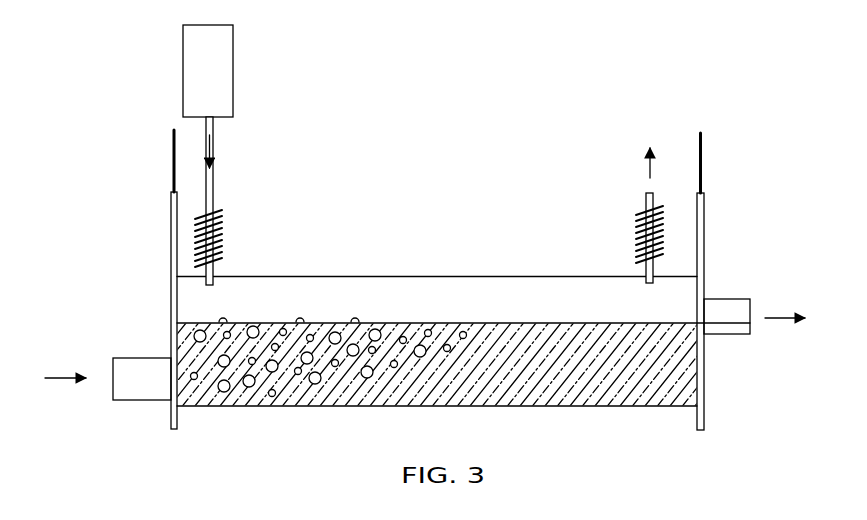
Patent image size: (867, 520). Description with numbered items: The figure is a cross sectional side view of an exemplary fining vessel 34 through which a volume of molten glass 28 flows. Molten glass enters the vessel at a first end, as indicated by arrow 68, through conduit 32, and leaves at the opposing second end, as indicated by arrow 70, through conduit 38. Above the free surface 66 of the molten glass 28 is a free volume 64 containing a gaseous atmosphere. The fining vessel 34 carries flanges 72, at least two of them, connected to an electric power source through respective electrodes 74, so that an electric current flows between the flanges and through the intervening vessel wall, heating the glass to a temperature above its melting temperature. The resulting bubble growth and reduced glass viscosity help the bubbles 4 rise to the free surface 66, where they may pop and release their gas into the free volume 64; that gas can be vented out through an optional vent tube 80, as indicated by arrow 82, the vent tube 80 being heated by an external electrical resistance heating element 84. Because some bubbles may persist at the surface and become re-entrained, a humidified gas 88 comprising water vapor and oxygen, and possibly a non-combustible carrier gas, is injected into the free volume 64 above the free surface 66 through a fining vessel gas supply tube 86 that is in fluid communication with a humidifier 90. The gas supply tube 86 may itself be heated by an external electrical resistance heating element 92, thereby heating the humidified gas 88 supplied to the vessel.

The bubble 4 is at (300, 322).
The molten glass 28 is at (587, 376).
The conduit 32 is at (145, 402).
The fining vessel 34 is at (503, 272).
The conduit 38 is at (728, 337).
The free volume 64 is at (445, 309).
The free surface 66 is at (516, 322).
The arrow 68 is at (68, 377).
The arrow 70 is at (782, 313).
The flange 72 is at (170, 222).
The electrode 74 is at (170, 147).
The vent tube 80 is at (654, 200).
The arrow 82 is at (648, 170).
The external electrical resistance heating element 84 is at (633, 234).
The fining vessel gas supply tube 86 is at (215, 192).
The humidified gas 88 is at (213, 148).
The humidifier 90 is at (233, 78).
The external electrical resistance heating element 92 is at (229, 219).